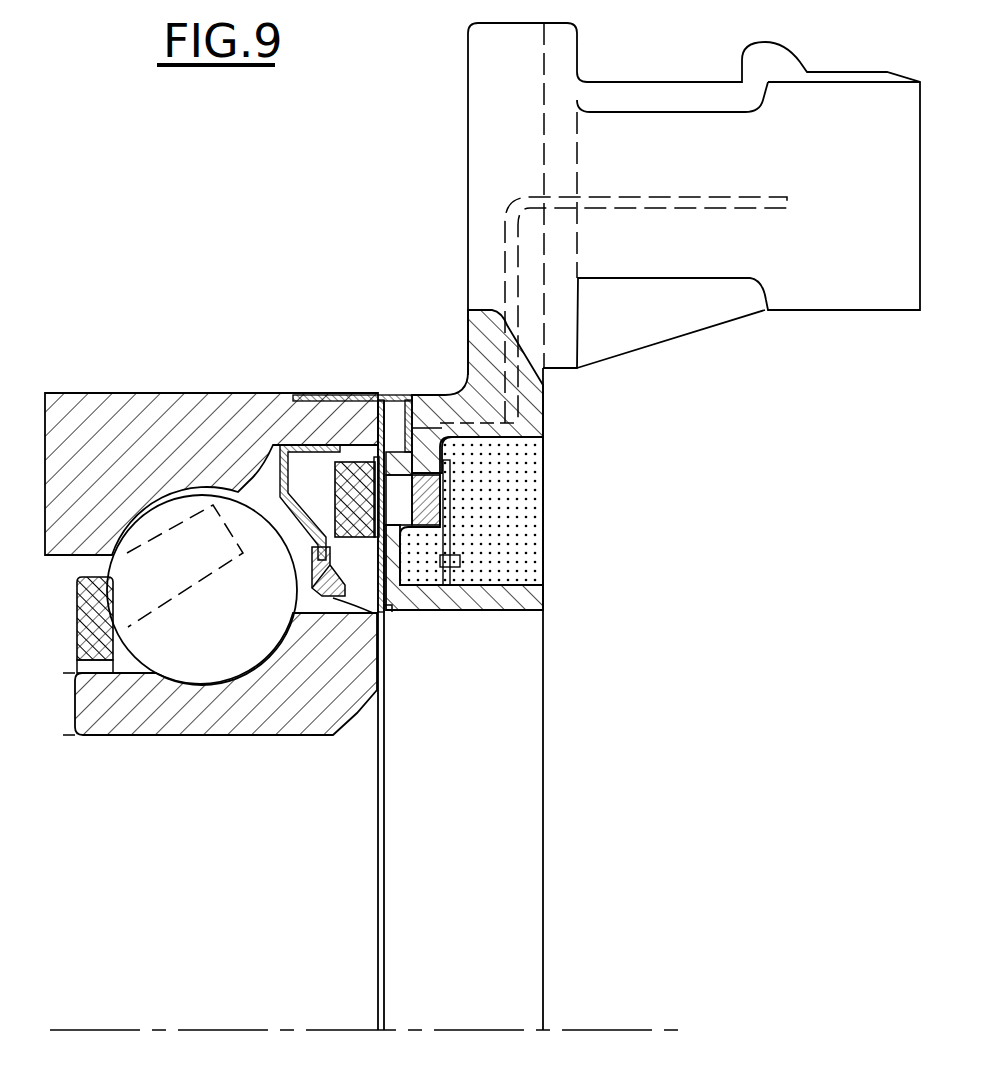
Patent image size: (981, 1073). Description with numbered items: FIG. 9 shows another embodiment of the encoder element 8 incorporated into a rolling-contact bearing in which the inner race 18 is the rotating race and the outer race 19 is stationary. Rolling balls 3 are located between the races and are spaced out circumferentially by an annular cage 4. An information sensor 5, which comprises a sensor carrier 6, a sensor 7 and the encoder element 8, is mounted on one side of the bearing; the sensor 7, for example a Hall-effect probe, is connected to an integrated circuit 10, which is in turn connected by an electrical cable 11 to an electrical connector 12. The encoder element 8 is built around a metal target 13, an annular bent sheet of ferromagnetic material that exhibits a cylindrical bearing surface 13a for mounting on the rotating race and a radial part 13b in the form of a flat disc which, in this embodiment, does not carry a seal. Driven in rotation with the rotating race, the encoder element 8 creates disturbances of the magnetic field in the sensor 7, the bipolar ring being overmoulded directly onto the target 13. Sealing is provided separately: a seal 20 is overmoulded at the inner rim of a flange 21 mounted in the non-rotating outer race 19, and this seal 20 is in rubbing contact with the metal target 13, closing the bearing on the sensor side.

The rolling balls 3 is at (207, 652).
The annular cage 4 is at (93, 638).
The information sensor 5 is at (544, 741).
The sensor carrier 6 is at (488, 828).
The sensor 7 is at (392, 506).
The encoder element 8 is at (334, 492).
The integrated circuit 10 is at (445, 482).
The electrical cable 11 is at (512, 392).
The electrical connector 12 is at (672, 200).
The metal target 13 is at (386, 618).
The cylindrical bearing surface 13a is at (348, 614).
The radial part 13b is at (386, 612).
The inner race 18 is at (150, 702).
The outer race 19 is at (103, 420).
The seal 20 is at (337, 597).
The flange 21 is at (280, 477).